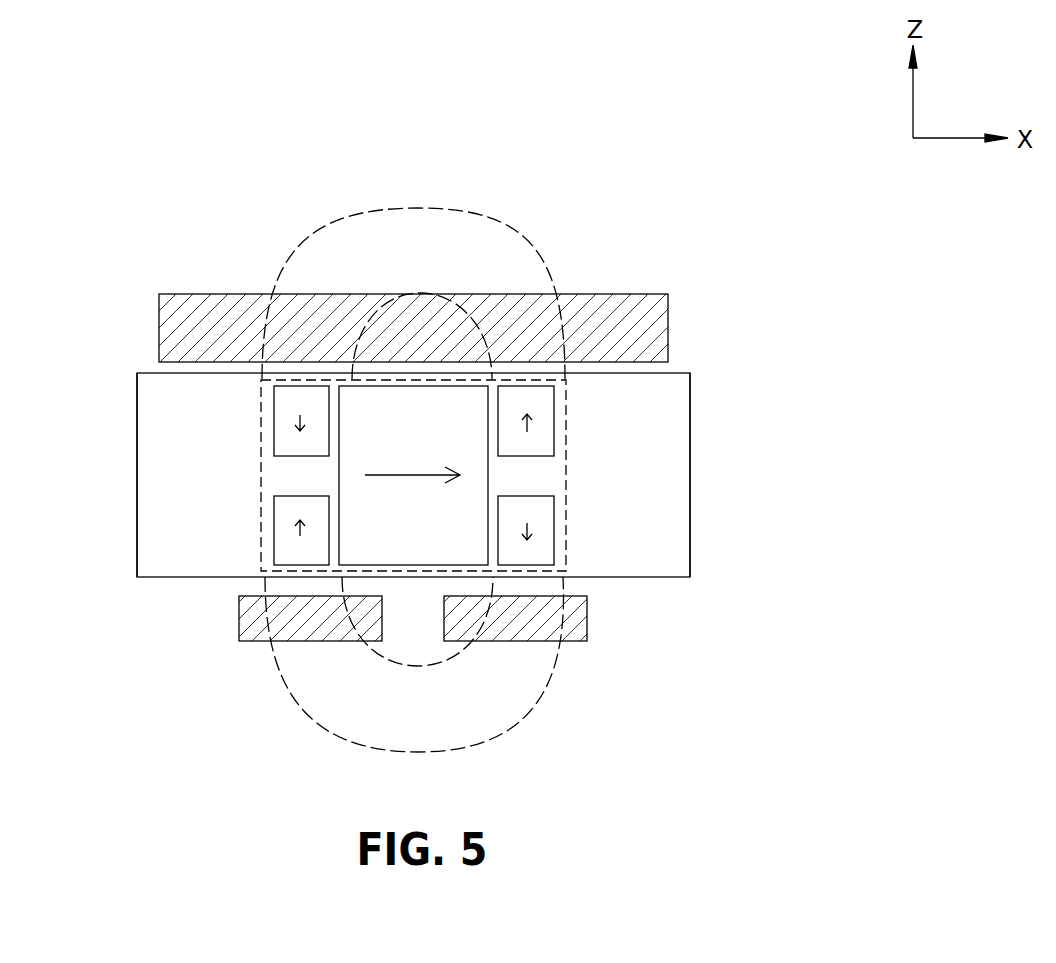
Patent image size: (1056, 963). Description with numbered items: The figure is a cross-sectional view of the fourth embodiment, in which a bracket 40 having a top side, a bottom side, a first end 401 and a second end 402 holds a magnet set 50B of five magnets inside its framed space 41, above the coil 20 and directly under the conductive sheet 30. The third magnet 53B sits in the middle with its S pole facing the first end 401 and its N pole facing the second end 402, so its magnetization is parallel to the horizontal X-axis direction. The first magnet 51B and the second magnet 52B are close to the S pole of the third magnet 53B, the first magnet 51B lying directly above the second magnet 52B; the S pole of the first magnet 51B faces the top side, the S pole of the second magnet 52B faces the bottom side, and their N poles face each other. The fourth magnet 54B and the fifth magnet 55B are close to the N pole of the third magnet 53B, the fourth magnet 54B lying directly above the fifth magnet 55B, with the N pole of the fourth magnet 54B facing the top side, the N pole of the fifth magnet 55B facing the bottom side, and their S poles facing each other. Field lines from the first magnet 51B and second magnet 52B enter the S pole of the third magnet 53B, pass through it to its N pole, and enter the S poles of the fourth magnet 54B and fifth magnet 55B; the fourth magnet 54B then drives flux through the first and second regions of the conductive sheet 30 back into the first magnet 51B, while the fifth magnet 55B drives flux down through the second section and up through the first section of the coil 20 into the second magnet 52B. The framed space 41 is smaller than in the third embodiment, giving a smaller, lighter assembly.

The coil 20 is at (580, 623).
The conductive sheet 30 is at (625, 317).
The bracket 40 is at (165, 403).
The first end of the bracket 401 is at (137, 552).
The second end of the bracket 402 is at (690, 551).
The framed space 41 is at (566, 418).
The magnet set 50B is at (268, 148).
The first magnet 51B is at (318, 405).
The second magnet 52B is at (282, 537).
The third magnet 53B is at (425, 410).
The fourth magnet 54B is at (545, 397).
The fifth magnet 55B is at (510, 503).